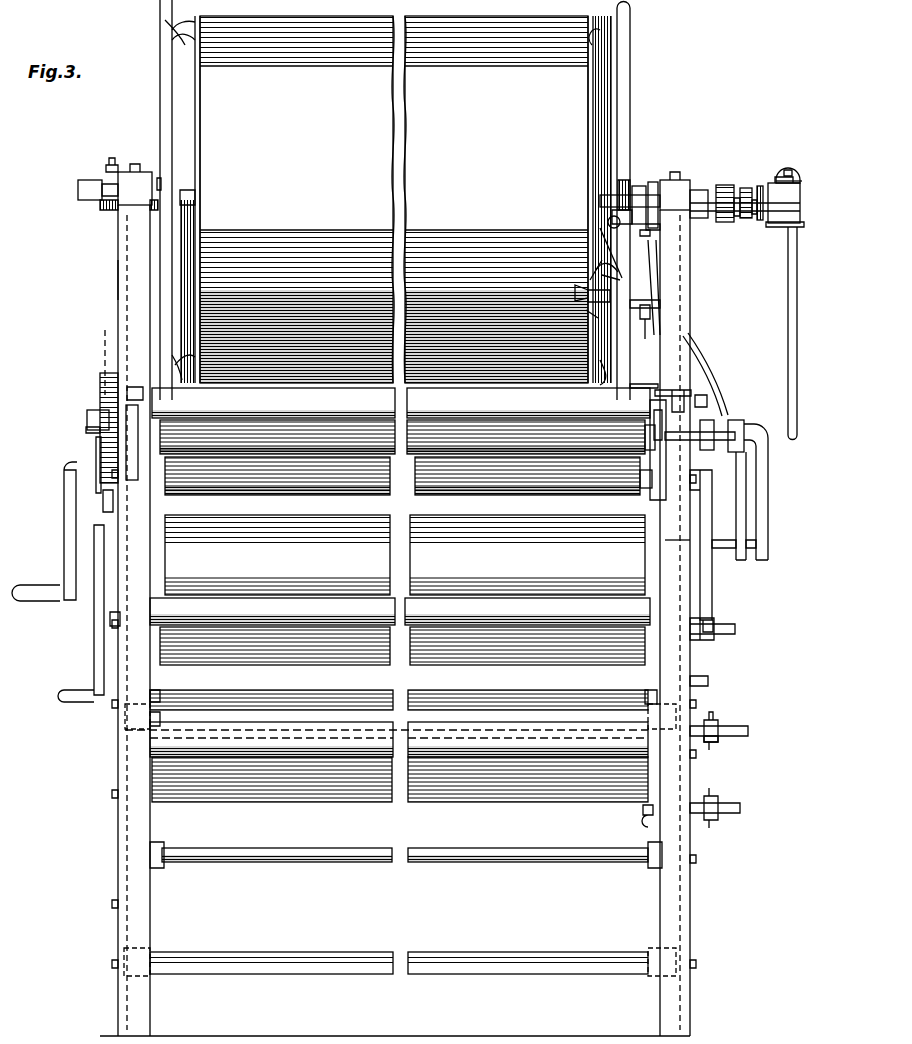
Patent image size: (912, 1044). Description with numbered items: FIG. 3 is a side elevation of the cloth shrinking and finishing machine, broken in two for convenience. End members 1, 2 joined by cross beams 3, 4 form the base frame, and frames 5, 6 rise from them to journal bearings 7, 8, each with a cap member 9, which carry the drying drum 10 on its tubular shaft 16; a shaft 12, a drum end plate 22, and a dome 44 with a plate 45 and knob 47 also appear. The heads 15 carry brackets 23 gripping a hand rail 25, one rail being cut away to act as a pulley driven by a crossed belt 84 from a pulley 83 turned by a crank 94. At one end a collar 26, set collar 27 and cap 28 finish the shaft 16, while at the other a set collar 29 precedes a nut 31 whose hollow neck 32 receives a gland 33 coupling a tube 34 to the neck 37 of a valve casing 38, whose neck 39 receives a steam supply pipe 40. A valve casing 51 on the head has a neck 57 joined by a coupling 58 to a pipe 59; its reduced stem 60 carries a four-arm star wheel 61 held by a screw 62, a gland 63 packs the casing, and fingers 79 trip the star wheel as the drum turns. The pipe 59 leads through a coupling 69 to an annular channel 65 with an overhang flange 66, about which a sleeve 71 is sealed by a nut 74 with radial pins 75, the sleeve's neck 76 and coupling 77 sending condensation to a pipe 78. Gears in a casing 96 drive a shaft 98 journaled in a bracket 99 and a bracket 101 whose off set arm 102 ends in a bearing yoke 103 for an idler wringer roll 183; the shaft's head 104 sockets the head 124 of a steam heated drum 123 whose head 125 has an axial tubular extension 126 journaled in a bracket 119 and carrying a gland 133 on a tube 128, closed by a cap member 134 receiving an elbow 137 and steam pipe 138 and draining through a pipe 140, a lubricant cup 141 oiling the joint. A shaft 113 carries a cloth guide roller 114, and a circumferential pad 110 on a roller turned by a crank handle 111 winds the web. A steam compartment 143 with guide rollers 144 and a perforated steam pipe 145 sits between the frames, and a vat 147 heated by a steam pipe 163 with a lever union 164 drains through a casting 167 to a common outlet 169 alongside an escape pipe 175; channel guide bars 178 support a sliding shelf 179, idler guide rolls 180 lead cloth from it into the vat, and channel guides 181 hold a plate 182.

The end member 1 is at (118, 903).
The end member 2 is at (690, 915).
The cross beam 3 is at (399, 739).
The cross beam 4 is at (316, 952).
The frame 5 is at (118, 280).
The frame 6 is at (680, 530).
The journal bearing 7 is at (136, 212).
The journal bearing 8 is at (680, 195).
The cap member 9 is at (137, 172).
The drum 10 is at (394, 199).
The shaft 12 is at (96, 421).
The head 15 is at (397, 199).
The shaft 16 is at (104, 212).
The drum end plate 22 is at (200, 152).
The bracket 23 is at (190, 30).
The hand rail 25 is at (160, 97).
The collar 26 is at (158, 180).
The set collar 27 is at (114, 183).
The cap 28 is at (78, 195).
The set collar 29 is at (697, 218).
The nut 31 is at (724, 185).
The hollow neck 32 is at (734, 216).
The gland 33 is at (745, 188).
The tube 34 is at (752, 214).
The neck 37 is at (760, 186).
The valve casing 38 is at (784, 200).
The neck 39 is at (780, 227).
The pipe 40 is at (788, 322).
The dome 44 is at (774, 182).
The plate 45 is at (795, 181).
The knob 47 is at (794, 148).
The valve casing 51 is at (593, 292).
The neck 57 is at (600, 278).
The coupling 58 is at (608, 272).
The pipe 59 is at (615, 255).
The reduced stem 60 is at (645, 325).
The four-arm star wheel 61 is at (655, 330).
The screw 62 is at (655, 300).
The gland 63 is at (599, 321).
The annular channel 65 is at (625, 217).
The overhang flange 66 is at (628, 195).
The coupling 69 is at (607, 220).
The sleeve 71 is at (630, 192).
The nut 74 is at (640, 186).
The radial pin 75 is at (654, 182).
The neck 76 is at (655, 228).
The coupling 77 is at (648, 236).
The pipe 78 is at (722, 392).
The finger 79 is at (650, 386).
The pulley 83 is at (178, 515).
The belt 84 is at (277, 476).
The crank 94 is at (68, 556).
The casing 96 is at (103, 378).
The shaft 98 is at (87, 418).
The bracket 99 is at (96, 452).
The bracket 101 is at (135, 445).
The off set arm 102 is at (86, 430).
The bearing yoke 103 is at (136, 387).
The head 104 is at (273, 403).
The circumferential pad 110 is at (527, 555).
The crank handle 111 is at (712, 560).
The shaft 113 is at (626, 478).
The cloth guide roller 114 is at (527, 476).
The bracket 119 is at (672, 450).
The drum 123 is at (526, 437).
The head 124 is at (277, 437).
The head 125 is at (626, 437).
The axial tubular extension 126 is at (690, 440).
The tube 128 is at (737, 423).
The gland 133 is at (744, 420).
The cap member 134 is at (768, 434).
The elbow 137 is at (762, 462).
The pipe 138 is at (768, 493).
The pipe 140 is at (768, 545).
The lubricant cup 141 is at (677, 391).
The steam compartment 143 is at (402, 650).
The guide roller 144 is at (400, 611).
The perforated steam pipe 145 is at (725, 627).
The vat 147 is at (352, 790).
The steam pipe 163 is at (730, 730).
The lever union 164 is at (718, 742).
The casting 167 is at (645, 815).
The common outlet 169 is at (725, 815).
The escape pipe 175 is at (708, 681).
The channel guide bar 178 is at (160, 868).
The shelf 179 is at (532, 862).
The idler guide roll 180 is at (175, 715).
The channel guide 181 is at (150, 698).
The plate 182 is at (432, 697).
The idler wringer roll 183 is at (528, 403).